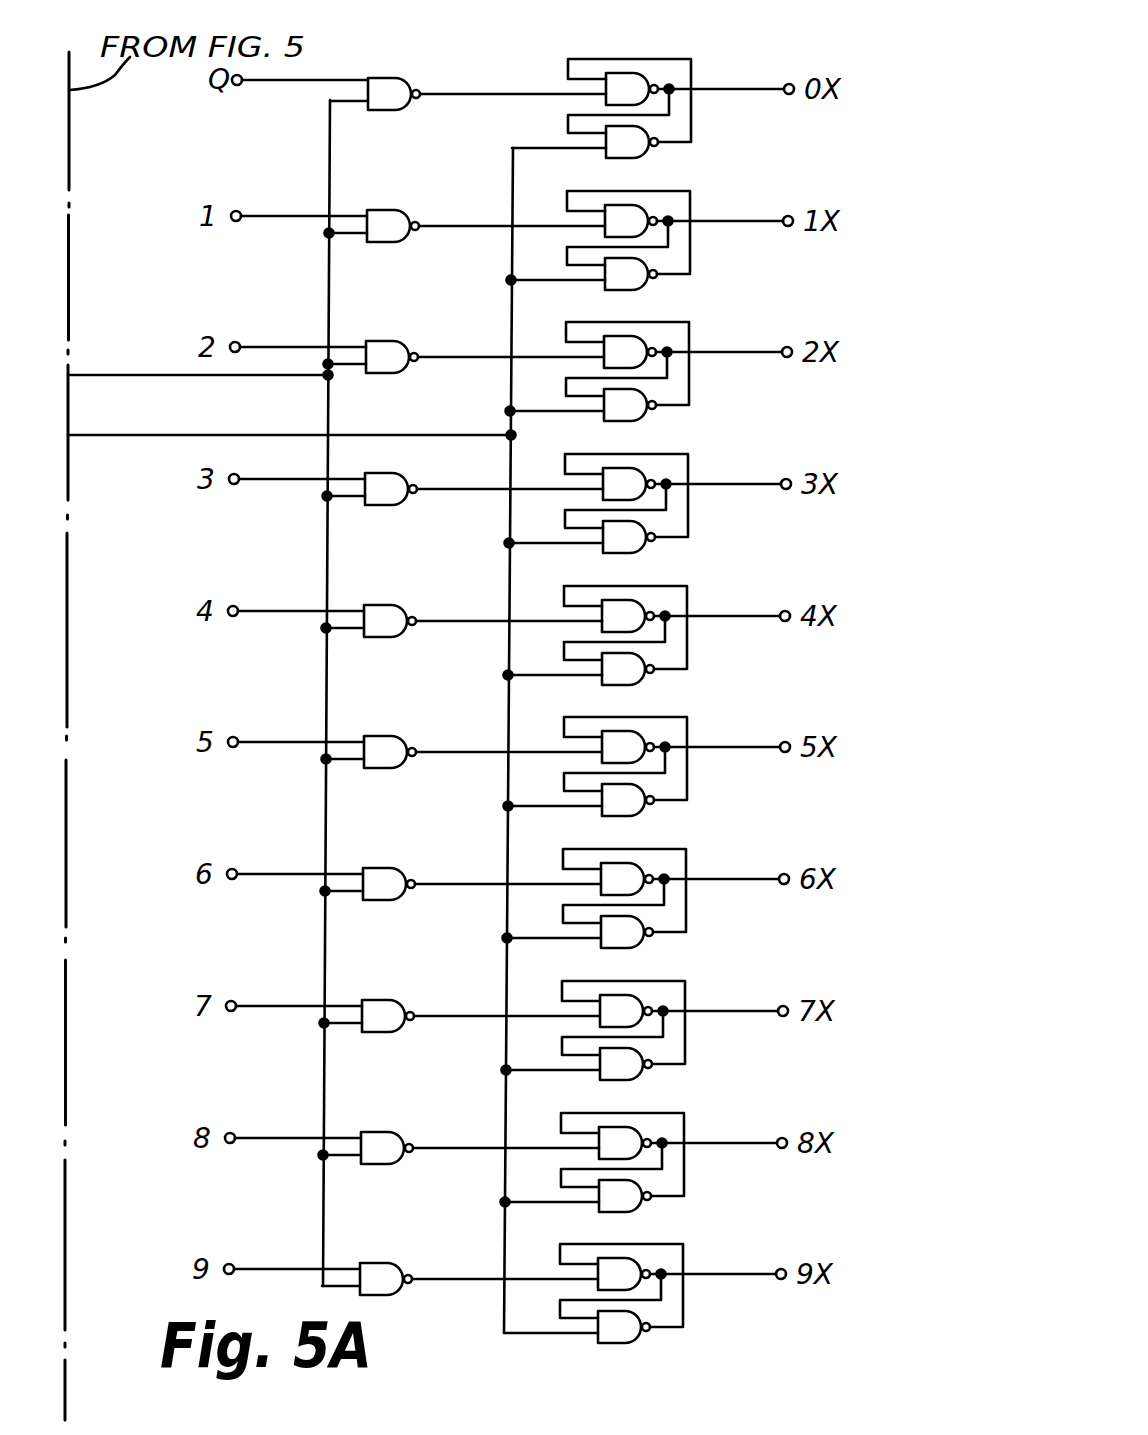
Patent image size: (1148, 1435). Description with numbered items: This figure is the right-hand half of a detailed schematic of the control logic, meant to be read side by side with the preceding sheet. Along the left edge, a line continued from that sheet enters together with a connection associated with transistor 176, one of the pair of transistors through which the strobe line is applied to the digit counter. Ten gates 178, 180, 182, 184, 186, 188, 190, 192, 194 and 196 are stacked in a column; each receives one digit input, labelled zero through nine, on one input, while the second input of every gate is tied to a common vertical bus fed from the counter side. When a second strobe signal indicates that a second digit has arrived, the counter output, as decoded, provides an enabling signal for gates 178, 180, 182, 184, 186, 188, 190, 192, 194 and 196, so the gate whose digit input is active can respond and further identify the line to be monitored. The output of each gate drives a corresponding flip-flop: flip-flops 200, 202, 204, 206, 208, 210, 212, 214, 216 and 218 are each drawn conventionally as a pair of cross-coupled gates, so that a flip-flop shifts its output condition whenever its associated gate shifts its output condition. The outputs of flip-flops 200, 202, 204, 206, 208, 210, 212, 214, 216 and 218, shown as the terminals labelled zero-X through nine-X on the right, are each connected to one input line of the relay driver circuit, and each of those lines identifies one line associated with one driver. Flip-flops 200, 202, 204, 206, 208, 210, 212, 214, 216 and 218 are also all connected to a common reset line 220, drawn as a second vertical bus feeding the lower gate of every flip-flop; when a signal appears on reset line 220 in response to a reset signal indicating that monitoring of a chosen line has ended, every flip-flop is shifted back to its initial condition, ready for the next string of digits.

The transistor 176 is at (167, 348).
The gate 178 is at (425, 73).
The gate 180 is at (417, 205).
The gate 182 is at (415, 336).
The gate 184 is at (411, 468).
The gate 186 is at (403, 600).
The gate 188 is at (403, 731).
The gate 190 is at (402, 863).
The gate 192 is at (401, 995).
The gate 194 is at (400, 1127).
The gate 196 is at (399, 1258).
The flip-flop 200 is at (652, 89).
The flip-flop 202 is at (651, 221).
The flip-flop 204 is at (650, 352).
The flip-flop 206 is at (649, 484).
The flip-flop 208 is at (648, 616).
The flip-flop 210 is at (648, 747).
The flip-flop 212 is at (647, 879).
The flip-flop 214 is at (646, 1011).
The flip-flop 216 is at (645, 1143).
The flip-flop 218 is at (644, 1274).
The reset line 220 is at (284, 419).